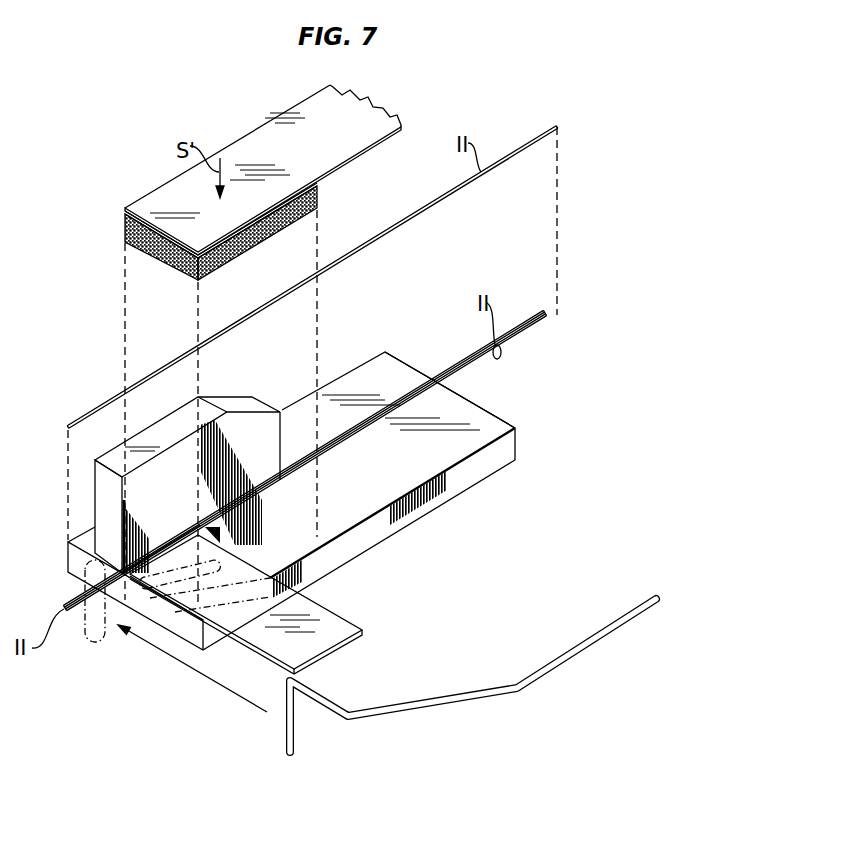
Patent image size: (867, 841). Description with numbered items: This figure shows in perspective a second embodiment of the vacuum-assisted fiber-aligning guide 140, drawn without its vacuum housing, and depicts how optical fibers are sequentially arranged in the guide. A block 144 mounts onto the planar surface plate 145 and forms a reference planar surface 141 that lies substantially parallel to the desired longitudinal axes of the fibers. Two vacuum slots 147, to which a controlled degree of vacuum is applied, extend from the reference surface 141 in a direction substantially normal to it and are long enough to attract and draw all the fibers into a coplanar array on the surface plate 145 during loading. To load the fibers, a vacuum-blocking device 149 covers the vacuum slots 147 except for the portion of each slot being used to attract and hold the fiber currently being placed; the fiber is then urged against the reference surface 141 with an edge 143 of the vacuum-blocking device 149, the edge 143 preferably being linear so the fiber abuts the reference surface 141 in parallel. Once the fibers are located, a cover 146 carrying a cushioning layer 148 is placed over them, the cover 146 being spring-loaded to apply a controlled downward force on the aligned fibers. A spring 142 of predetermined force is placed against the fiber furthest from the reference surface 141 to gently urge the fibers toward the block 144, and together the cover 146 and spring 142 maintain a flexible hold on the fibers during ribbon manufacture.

The vacuum-assisted fiber-aligning guide 140 is at (533, 531).
The reference planar surface 141 is at (250, 427).
The spring 142 is at (595, 632).
The edge 143 is at (180, 540).
The block 144 is at (96, 488).
The surface plate 145 is at (381, 377).
The cover 146 is at (326, 178).
The vacuum slot 147 is at (243, 560).
The cushioning layer 148 is at (125, 231).
The vacuum-blocking device 149 is at (322, 605).